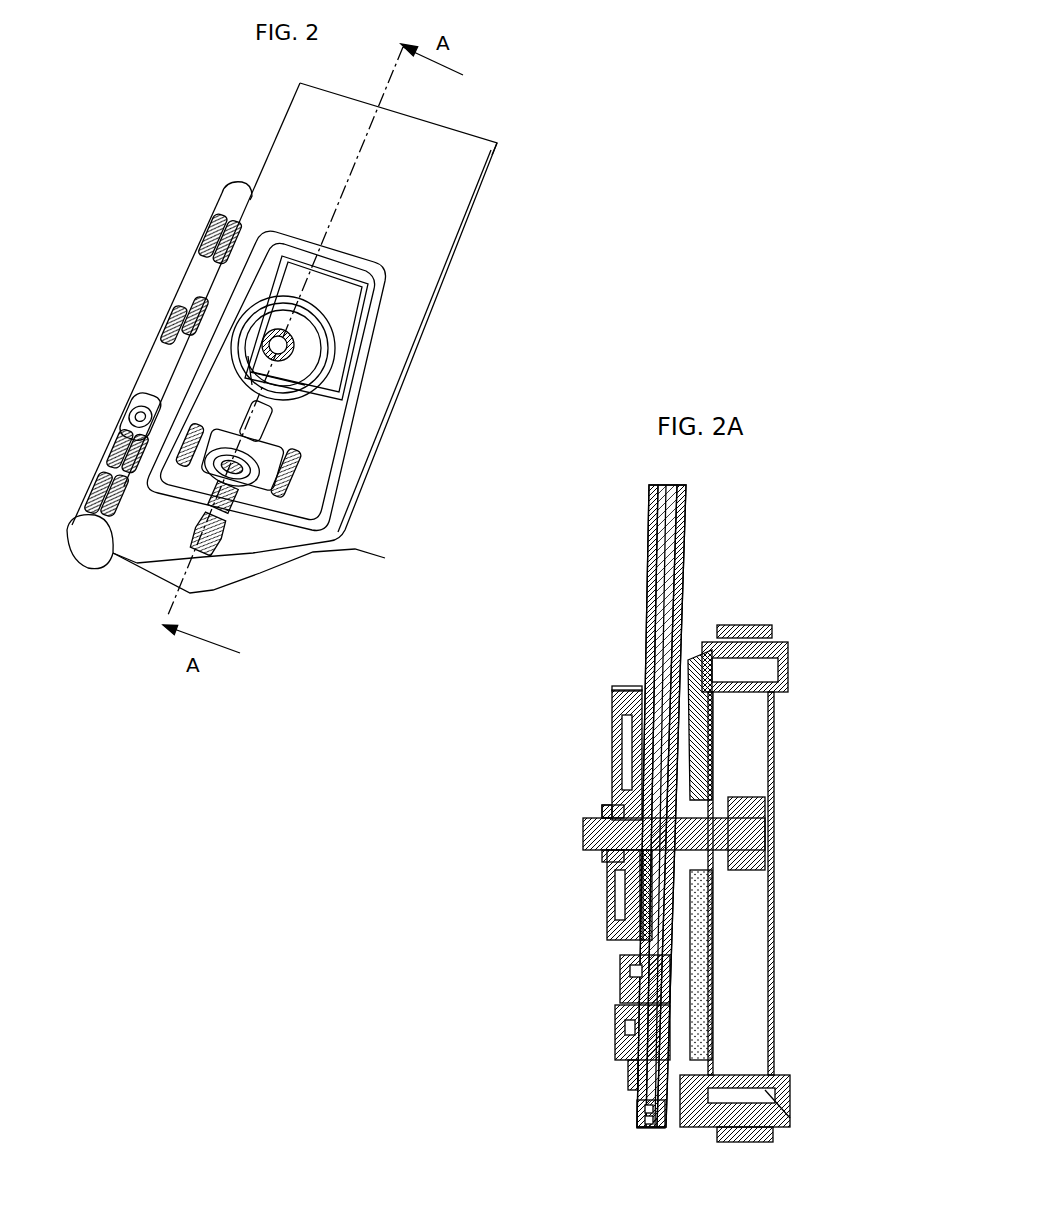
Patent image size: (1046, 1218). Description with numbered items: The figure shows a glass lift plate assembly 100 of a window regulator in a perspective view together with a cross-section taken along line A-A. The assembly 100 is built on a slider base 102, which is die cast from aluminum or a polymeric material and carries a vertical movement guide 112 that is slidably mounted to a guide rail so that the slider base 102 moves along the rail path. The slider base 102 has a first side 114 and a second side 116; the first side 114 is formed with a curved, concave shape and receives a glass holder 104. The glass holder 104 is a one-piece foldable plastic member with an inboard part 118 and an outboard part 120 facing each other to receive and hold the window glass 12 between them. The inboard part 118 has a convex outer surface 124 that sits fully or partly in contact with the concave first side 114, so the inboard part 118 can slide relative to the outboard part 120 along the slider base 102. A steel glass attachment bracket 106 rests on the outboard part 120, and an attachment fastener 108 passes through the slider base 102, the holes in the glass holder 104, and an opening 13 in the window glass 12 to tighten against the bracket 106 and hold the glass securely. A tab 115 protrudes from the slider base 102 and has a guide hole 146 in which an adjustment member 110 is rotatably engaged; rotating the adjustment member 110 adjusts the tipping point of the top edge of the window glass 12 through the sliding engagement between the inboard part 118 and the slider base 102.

In FIG. 2, the glass lift plate assembly 100 is at (137, 214).
In FIG. 2A, the glass lift plate assembly 100 is at (471, 809).
In FIG. 2, the window glass 12 is at (470, 222).
In FIG. 2A, the window glass 12 is at (688, 542).
In FIG. 2A, the opening 13 is at (613, 870).
In FIG. 2, the slider base 102 is at (385, 558).
In FIG. 2A, the slider base 102 is at (790, 1107).
In FIG. 2, the glass holder 104 is at (377, 268).
In FIG. 2A, the glass holder 104 is at (604, 716).
In FIG. 2, the glass attachment bracket 106 is at (347, 328).
In FIG. 2A, the glass attachment bracket 106 is at (612, 795).
In FIG. 2, the attachment fastener 108 is at (268, 318).
In FIG. 2A, the attachment fastener 108 is at (770, 833).
In FIG. 2, the adjustment member 110 is at (185, 522).
In FIG. 2A, the adjustment member 110 is at (633, 1078).
In FIG. 2, the vertical movement guide 112 is at (118, 408).
In FIG. 2, the first side 114 is at (154, 507).
In FIG. 2A, the first side 114 is at (712, 730).
In FIG. 2, the tab 115 is at (215, 500).
In FIG. 2A, the tab 115 is at (627, 1065).
In FIG. 2A, the second side 116 is at (722, 902).
In FIG. 2A, the inboard part 118 is at (720, 683).
In FIG. 2A, the outboard part 120 is at (612, 690).
In FIG. 2A, the outer surface 124 is at (700, 980).
In FIG. 2A, the guide hole 146 is at (627, 1083).